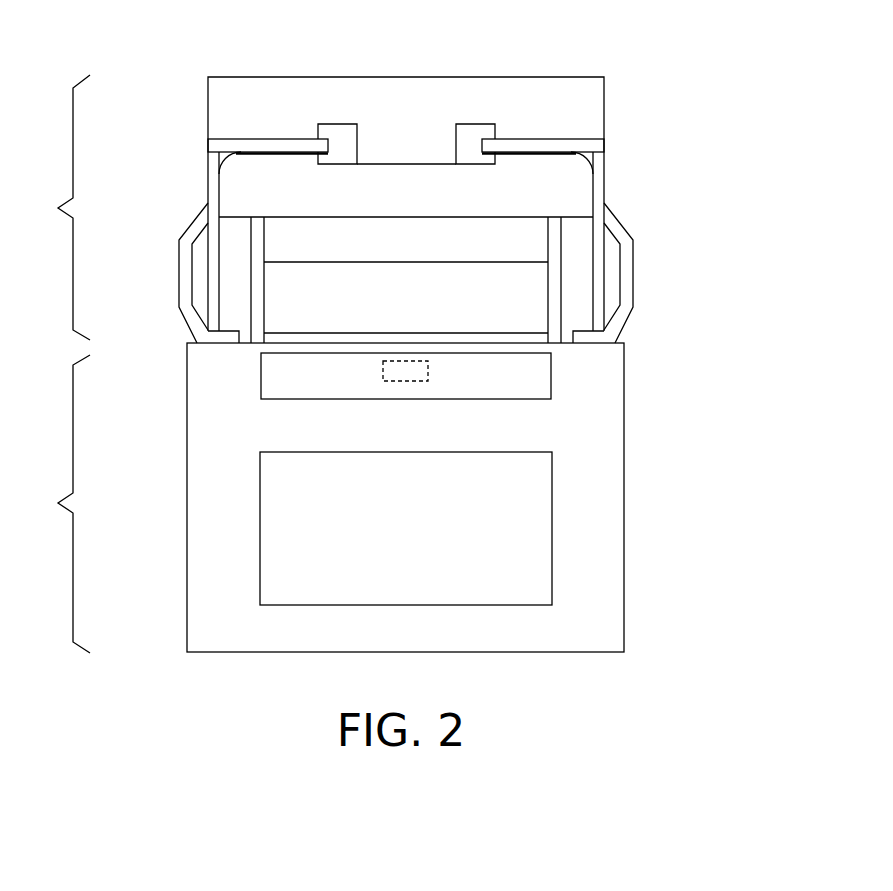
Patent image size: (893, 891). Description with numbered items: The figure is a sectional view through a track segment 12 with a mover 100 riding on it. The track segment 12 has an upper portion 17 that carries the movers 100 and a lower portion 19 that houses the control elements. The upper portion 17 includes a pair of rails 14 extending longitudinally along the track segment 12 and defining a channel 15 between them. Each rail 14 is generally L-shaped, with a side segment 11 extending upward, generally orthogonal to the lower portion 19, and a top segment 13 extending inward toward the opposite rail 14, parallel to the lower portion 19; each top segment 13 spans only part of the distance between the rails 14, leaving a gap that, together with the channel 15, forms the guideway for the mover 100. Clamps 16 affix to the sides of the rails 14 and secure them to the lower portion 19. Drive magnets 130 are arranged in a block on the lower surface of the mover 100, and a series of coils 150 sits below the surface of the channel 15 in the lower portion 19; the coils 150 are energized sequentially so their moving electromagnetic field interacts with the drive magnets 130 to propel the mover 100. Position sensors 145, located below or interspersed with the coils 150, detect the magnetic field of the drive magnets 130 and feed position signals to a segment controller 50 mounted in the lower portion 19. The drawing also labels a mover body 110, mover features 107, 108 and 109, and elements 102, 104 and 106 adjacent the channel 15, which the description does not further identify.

The mover 100 is at (680, 66).
The upper body / cover portion 110 is at (428, 119).
The top segment 13 is at (228, 147).
The rail 14 is at (204, 158).
The side segment 11 is at (210, 172).
The fillet / bonding region 107 is at (222, 187).
The pedestal block 109 is at (313, 155).
The intermediate layer 108 is at (428, 203).
The drive magnets 130 is at (423, 312).
The clamps 16 is at (178, 295).
The left spacer post 104 is at (251, 310).
The right spacer post 102 is at (568, 303).
The channel 15 is at (242, 349).
The right foot 106 is at (561, 344).
The track segment 12 is at (652, 492).
The coils 150 is at (332, 391).
The position sensors 145 is at (428, 372).
The segment controller 50 is at (423, 543).
The upper portion 17 is at (58, 207).
The lower portion 19 is at (57, 504).